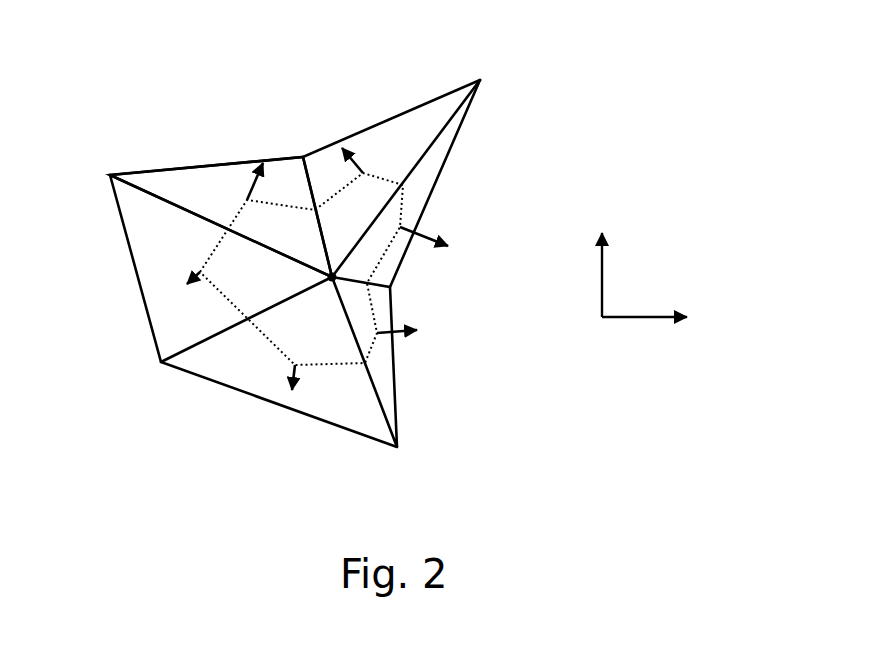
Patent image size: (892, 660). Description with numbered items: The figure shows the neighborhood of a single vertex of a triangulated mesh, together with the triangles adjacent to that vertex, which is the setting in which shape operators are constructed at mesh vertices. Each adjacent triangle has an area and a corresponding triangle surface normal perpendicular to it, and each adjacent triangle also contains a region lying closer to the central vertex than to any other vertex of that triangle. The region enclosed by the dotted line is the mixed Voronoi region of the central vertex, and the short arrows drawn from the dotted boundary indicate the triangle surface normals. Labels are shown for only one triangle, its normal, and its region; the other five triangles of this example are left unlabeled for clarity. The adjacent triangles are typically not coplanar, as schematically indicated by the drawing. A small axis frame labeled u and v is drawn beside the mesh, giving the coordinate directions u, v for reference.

The u axis u is at (662, 315).
The v axis v is at (602, 251).